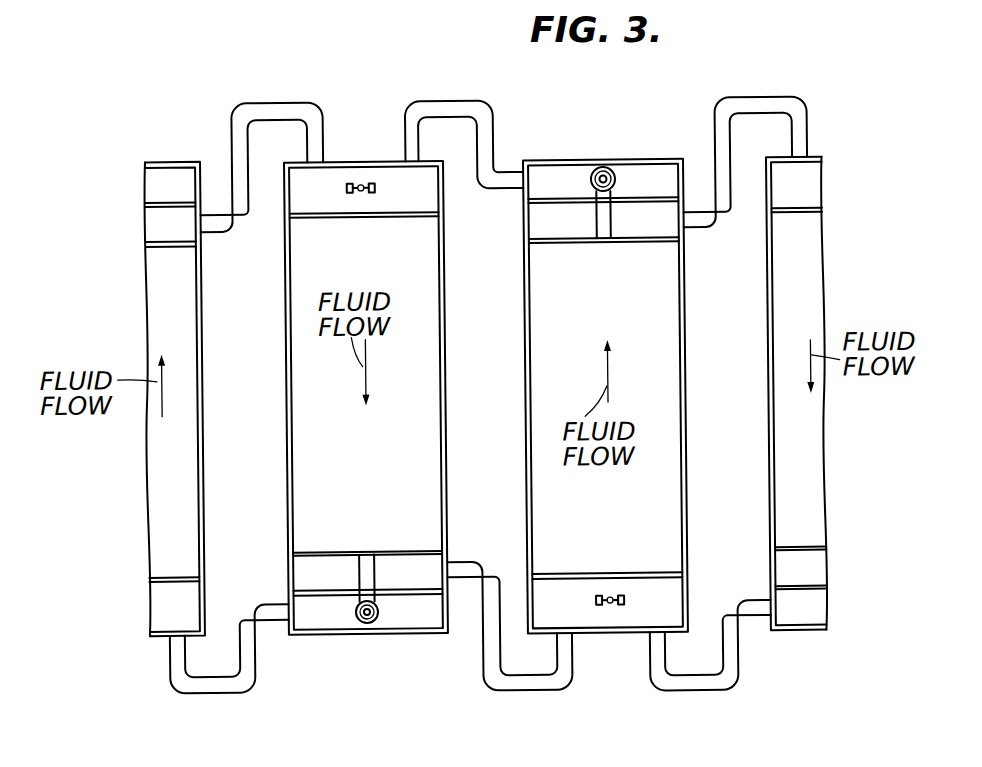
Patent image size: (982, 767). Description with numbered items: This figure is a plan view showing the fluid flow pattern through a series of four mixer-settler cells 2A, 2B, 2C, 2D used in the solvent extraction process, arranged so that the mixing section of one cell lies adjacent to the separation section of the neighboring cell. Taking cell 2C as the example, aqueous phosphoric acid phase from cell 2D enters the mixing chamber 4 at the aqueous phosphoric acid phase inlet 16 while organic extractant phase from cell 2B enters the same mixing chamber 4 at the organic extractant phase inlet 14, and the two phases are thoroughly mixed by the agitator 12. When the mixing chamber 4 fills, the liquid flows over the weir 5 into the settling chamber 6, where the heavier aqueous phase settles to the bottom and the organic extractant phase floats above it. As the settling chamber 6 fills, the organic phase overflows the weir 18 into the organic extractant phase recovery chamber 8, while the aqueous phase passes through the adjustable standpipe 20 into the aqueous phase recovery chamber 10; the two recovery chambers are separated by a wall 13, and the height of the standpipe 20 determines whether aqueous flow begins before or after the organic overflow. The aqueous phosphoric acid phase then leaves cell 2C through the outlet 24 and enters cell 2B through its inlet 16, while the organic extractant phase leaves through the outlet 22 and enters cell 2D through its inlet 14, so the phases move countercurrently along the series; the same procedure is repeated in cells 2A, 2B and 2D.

The mixer-settler cell 2A is at (207, 427).
The mixer-settler cell 2B is at (446, 293).
The mixer-settler cell 2C is at (527, 387).
The mixer-settler cell 2D is at (768, 398).
The mixing chamber 4 is at (304, 196).
The weir 5 is at (422, 213).
The settling chamber 6 is at (187, 476).
The organic extractant phase recovery chamber 8 is at (159, 218).
The aqueous phase recovery chamber 10 is at (177, 172).
The agitator 12 is at (366, 178).
The wall 13 is at (152, 197).
The organic extractant phase inlet 14 is at (325, 136).
The aqueous phosphoric acid phase inlet 16 is at (410, 143).
The weir 18 is at (635, 244).
The adjustable standpipe 20 is at (595, 169).
The outlet 22 is at (210, 240).
The outlet 24 is at (520, 154).